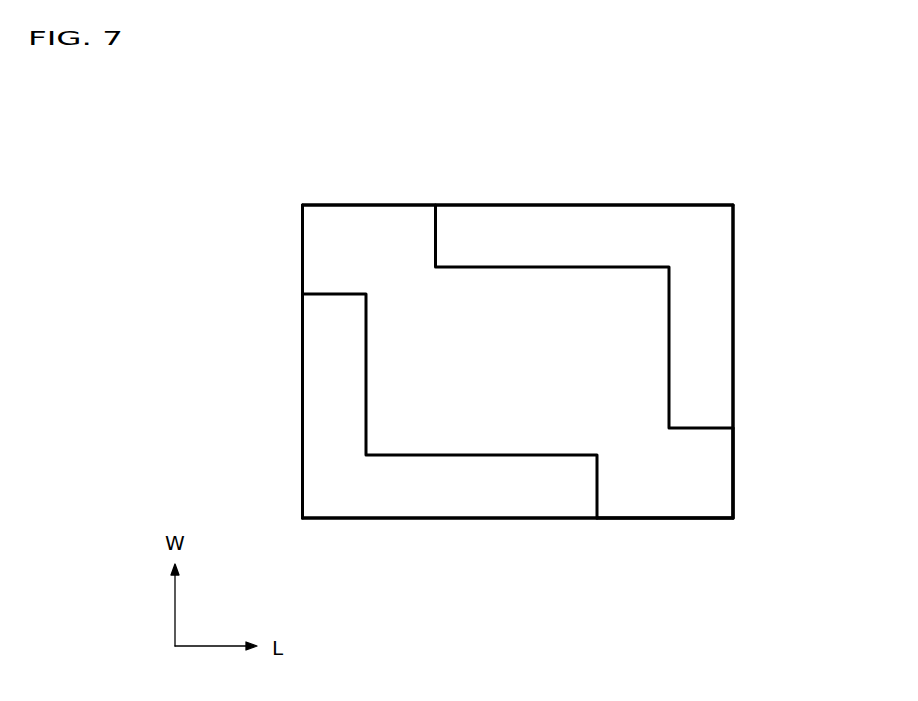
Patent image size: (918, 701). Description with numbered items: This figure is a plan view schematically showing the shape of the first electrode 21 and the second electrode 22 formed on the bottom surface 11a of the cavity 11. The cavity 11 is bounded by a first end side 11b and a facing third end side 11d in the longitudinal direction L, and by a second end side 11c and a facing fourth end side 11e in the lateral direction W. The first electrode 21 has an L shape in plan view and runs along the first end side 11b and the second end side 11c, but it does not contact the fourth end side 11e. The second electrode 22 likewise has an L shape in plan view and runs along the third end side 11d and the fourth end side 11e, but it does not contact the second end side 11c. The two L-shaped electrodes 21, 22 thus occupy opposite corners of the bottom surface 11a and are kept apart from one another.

The cavity 11 is at (357, 205).
The second electrode 22 is at (652, 215).
The first electrode 21 is at (420, 507).
The bottom surface 11a is at (716, 491).
The first end side 11b is at (302, 380).
The second end side 11c is at (563, 518).
The third end side 11d is at (733, 319).
The fourth end side 11e is at (528, 205).